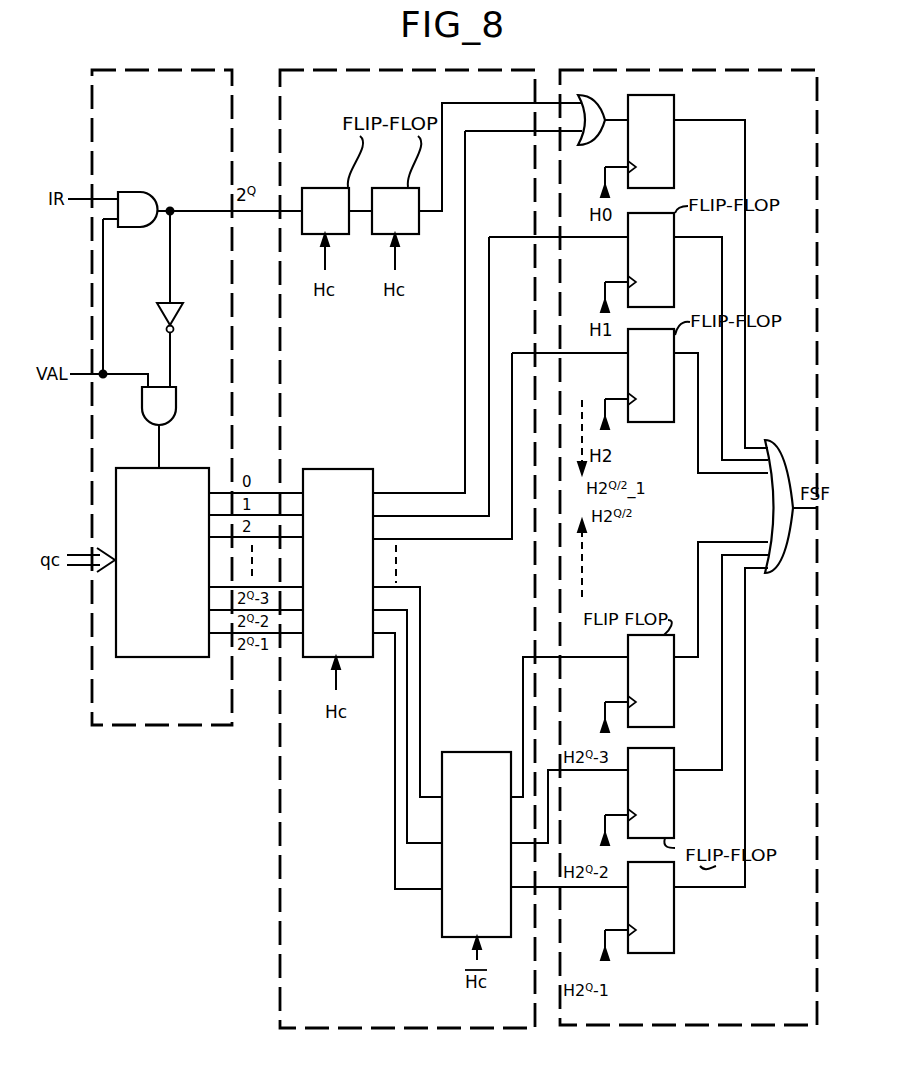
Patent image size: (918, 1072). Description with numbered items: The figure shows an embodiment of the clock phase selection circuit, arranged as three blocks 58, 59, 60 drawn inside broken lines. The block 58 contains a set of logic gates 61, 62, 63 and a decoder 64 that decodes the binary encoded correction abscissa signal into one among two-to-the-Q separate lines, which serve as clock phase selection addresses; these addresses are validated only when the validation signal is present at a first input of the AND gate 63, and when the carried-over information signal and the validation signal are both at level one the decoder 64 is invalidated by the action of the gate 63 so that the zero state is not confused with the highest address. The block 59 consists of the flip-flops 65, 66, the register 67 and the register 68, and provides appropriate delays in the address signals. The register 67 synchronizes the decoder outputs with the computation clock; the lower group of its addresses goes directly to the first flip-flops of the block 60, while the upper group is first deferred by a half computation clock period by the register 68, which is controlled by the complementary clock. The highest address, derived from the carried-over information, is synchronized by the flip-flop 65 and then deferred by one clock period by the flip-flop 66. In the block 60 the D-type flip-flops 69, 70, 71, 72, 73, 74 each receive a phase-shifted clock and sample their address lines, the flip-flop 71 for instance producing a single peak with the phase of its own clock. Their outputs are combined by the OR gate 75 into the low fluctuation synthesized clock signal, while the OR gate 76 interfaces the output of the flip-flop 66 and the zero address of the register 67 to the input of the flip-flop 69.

The block 58 is at (170, 70).
The block 59 is at (315, 70).
The block 60 is at (638, 70).
The logic gate 61 is at (134, 192).
The logic gate 62 is at (181, 314).
The AND gate 63 is at (176, 395).
The decoder 64 is at (167, 657).
The flip-flop 65 is at (327, 188).
The flip-flop 66 is at (393, 188).
The register 67 is at (338, 469).
The register 68 is at (475, 752).
The flip-flop 69 is at (674, 160).
The flip-flop 70 is at (674, 270).
The flip-flop 71 is at (655, 422).
The flip-flop 72 is at (674, 703).
The flip-flop 73 is at (674, 803).
The flip-flop 74 is at (674, 925).
The OR gate 75 is at (790, 550).
The OR gate 76 is at (604, 86).